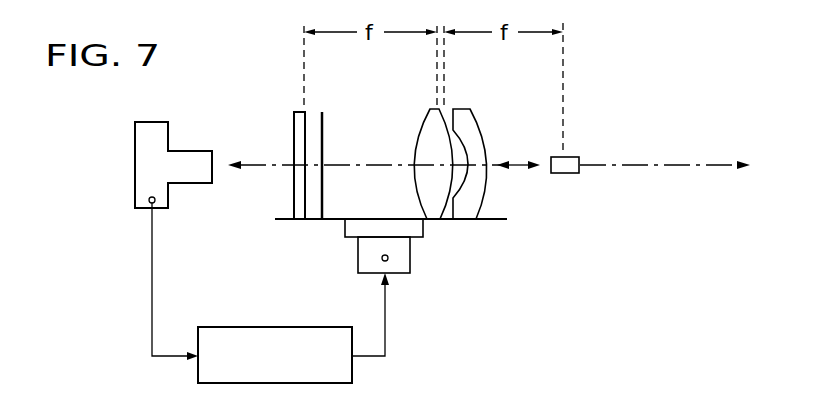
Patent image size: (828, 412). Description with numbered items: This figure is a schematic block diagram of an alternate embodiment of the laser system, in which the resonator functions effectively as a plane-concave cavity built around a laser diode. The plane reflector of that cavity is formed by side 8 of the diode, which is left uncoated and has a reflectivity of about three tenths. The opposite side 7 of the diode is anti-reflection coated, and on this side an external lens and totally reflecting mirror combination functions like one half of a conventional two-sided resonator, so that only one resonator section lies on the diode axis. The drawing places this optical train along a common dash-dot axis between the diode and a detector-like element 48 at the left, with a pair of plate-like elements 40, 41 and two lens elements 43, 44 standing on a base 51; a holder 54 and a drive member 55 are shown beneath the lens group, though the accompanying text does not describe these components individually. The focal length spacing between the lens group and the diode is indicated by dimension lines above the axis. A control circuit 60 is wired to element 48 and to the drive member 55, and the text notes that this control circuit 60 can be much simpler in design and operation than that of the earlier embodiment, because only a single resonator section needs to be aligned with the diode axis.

The side of the diode 7 is at (555, 153).
The side of the diode 8 is at (580, 160).
The slit plate 40 is at (294, 111).
The shutter plate 41 is at (323, 118).
The biconvex lens 43 is at (431, 108).
The meniscus lens 44 is at (470, 108).
The photodetector 48 is at (203, 148).
The base plate 51 is at (492, 221).
The lens holder 54 is at (344, 230).
The drive motor 55 is at (405, 263).
The control circuit 60 is at (345, 371).